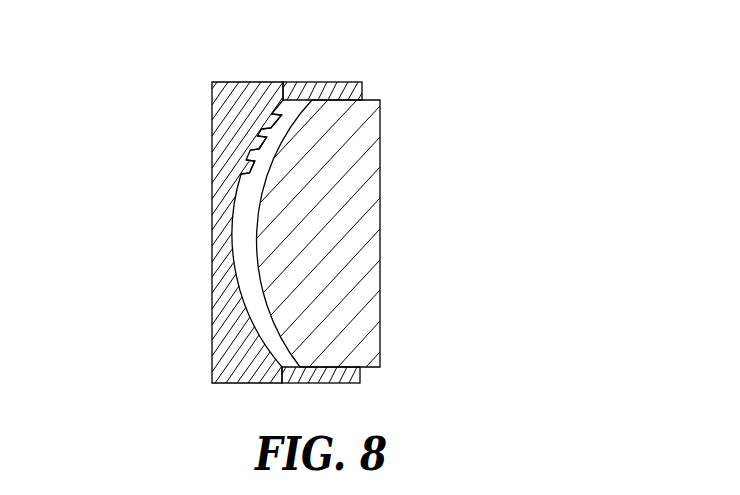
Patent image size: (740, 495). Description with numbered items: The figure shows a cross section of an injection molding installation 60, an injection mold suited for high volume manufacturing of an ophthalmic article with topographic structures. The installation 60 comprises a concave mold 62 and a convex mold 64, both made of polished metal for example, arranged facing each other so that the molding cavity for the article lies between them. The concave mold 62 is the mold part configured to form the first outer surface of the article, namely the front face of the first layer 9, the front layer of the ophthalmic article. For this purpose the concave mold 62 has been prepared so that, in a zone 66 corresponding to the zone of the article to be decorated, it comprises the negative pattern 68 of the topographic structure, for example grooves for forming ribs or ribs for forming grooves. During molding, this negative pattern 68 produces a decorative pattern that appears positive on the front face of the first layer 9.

The injection molding installation 60 is at (358, 203).
The concave mold 62 is at (223, 345).
The convex mold 64 is at (343, 267).
The zone 66 is at (193, 95).
The negative pattern 68 is at (242, 120).
The first layer 9 is at (243, 229).